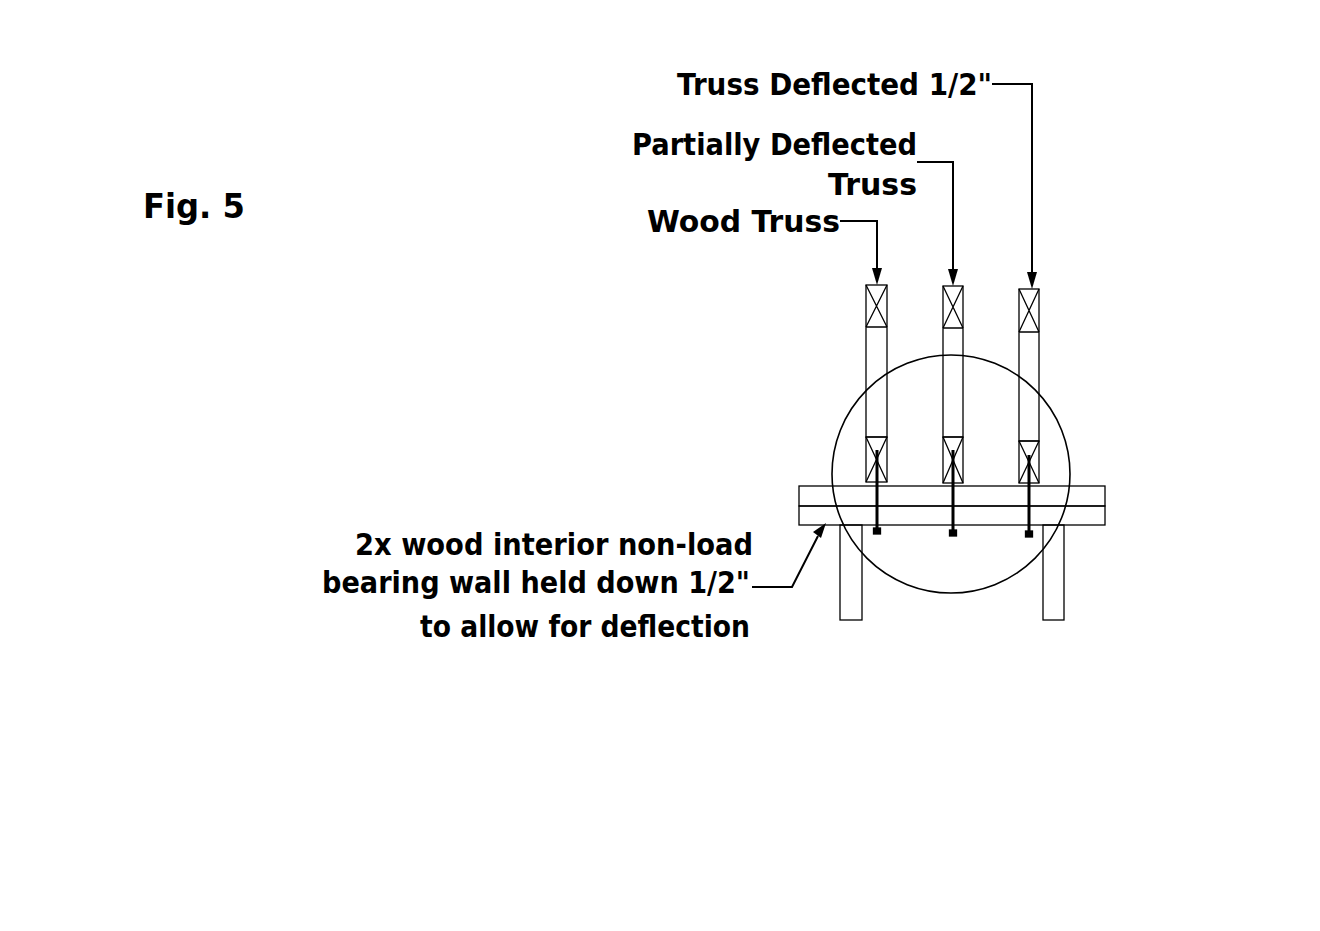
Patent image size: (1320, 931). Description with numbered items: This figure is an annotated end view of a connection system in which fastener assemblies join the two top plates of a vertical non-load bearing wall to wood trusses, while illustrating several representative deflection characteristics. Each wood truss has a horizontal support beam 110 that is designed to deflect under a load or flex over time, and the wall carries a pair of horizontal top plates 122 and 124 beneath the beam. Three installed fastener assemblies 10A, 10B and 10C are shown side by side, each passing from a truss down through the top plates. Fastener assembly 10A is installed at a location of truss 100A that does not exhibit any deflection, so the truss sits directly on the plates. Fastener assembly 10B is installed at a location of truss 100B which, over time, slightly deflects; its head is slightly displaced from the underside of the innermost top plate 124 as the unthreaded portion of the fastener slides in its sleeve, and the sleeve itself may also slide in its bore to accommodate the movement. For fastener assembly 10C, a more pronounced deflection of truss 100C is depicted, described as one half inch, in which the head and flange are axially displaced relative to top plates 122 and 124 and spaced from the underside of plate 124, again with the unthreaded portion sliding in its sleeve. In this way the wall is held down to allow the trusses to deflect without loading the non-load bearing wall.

The truss 100A is at (803, 339).
The truss 100B is at (925, 319).
The truss 100C is at (1027, 49).
The horizontal support beam 110 is at (868, 470).
The fastener assembly 10A is at (866, 478).
The fastener assembly 10B is at (963, 478).
The fastener assembly 10C is at (1044, 504).
The top plate 122 is at (1097, 490).
The top plate 124 is at (1105, 517).